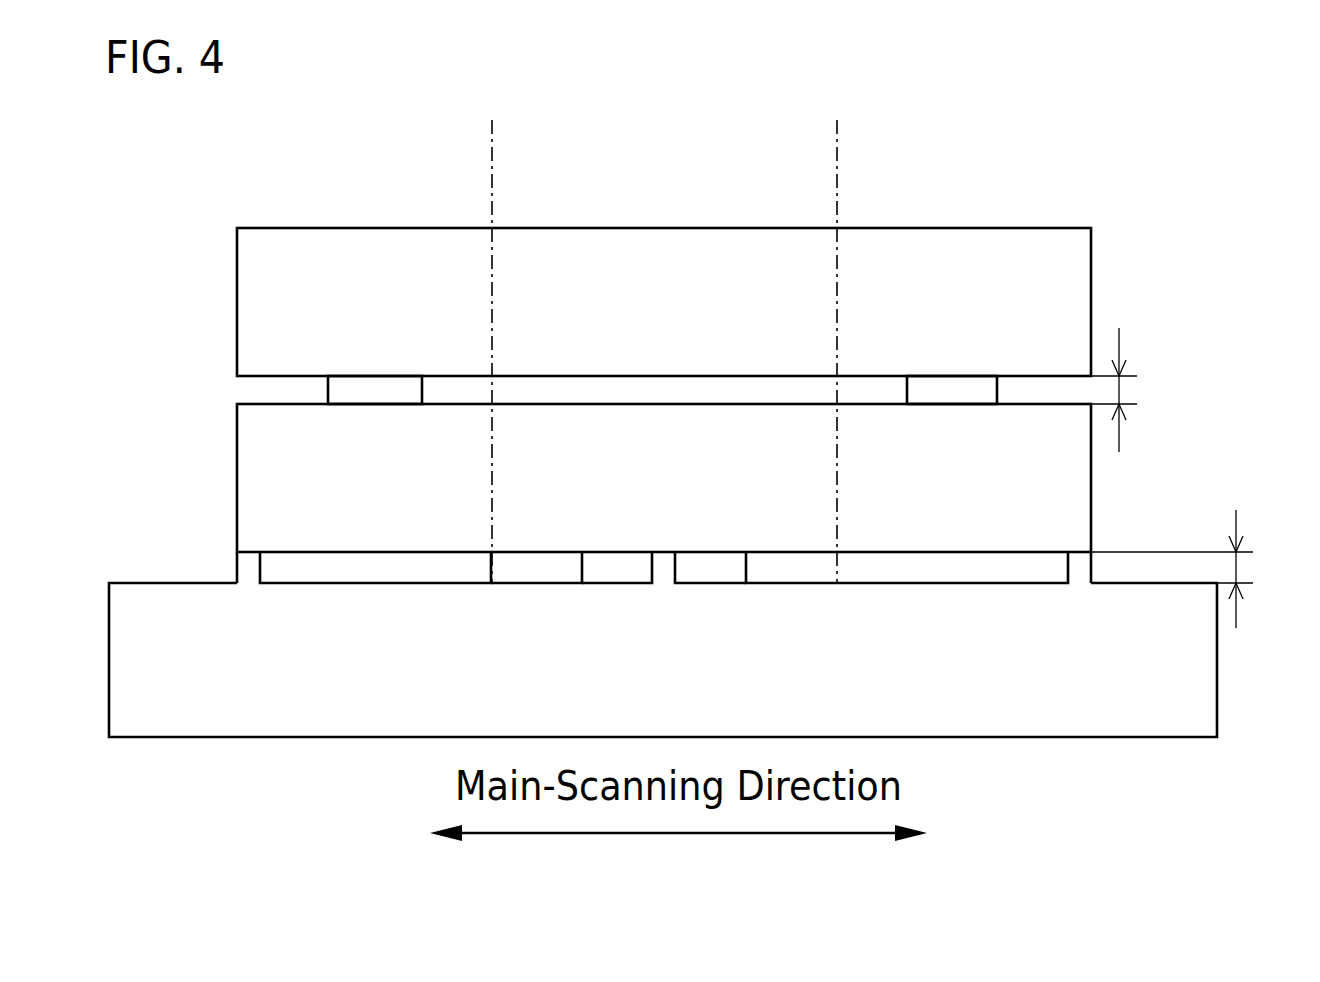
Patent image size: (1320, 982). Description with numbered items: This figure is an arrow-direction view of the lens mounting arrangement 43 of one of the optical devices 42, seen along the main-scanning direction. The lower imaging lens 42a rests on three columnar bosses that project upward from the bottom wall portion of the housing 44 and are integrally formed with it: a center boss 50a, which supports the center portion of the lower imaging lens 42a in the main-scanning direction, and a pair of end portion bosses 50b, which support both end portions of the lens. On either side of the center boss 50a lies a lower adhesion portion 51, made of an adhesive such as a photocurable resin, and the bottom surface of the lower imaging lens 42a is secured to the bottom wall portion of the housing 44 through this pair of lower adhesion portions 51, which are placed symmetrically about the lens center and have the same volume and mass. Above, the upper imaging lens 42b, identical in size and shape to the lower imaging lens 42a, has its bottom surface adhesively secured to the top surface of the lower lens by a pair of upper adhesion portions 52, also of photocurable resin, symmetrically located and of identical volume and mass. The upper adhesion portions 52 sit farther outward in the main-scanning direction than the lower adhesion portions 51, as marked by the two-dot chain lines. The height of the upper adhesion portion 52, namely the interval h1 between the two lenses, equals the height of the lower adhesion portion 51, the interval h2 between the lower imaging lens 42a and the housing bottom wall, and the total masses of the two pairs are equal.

The recording head 43 is at (297, 183).
The optical device 42 is at (1003, 217).
The lower imaging lens 42a is at (1091, 515).
The upper imaging lens 42b is at (1091, 265).
The housing 44 is at (167, 581).
The center boss 50a is at (660, 561).
The end portion boss 50b is at (248, 565).
The lower adhesion portion 51 is at (535, 565).
The upper adhesion portion 52 is at (388, 387).
The interval h1 is at (1138, 390).
The interval h2 is at (1195, 569).